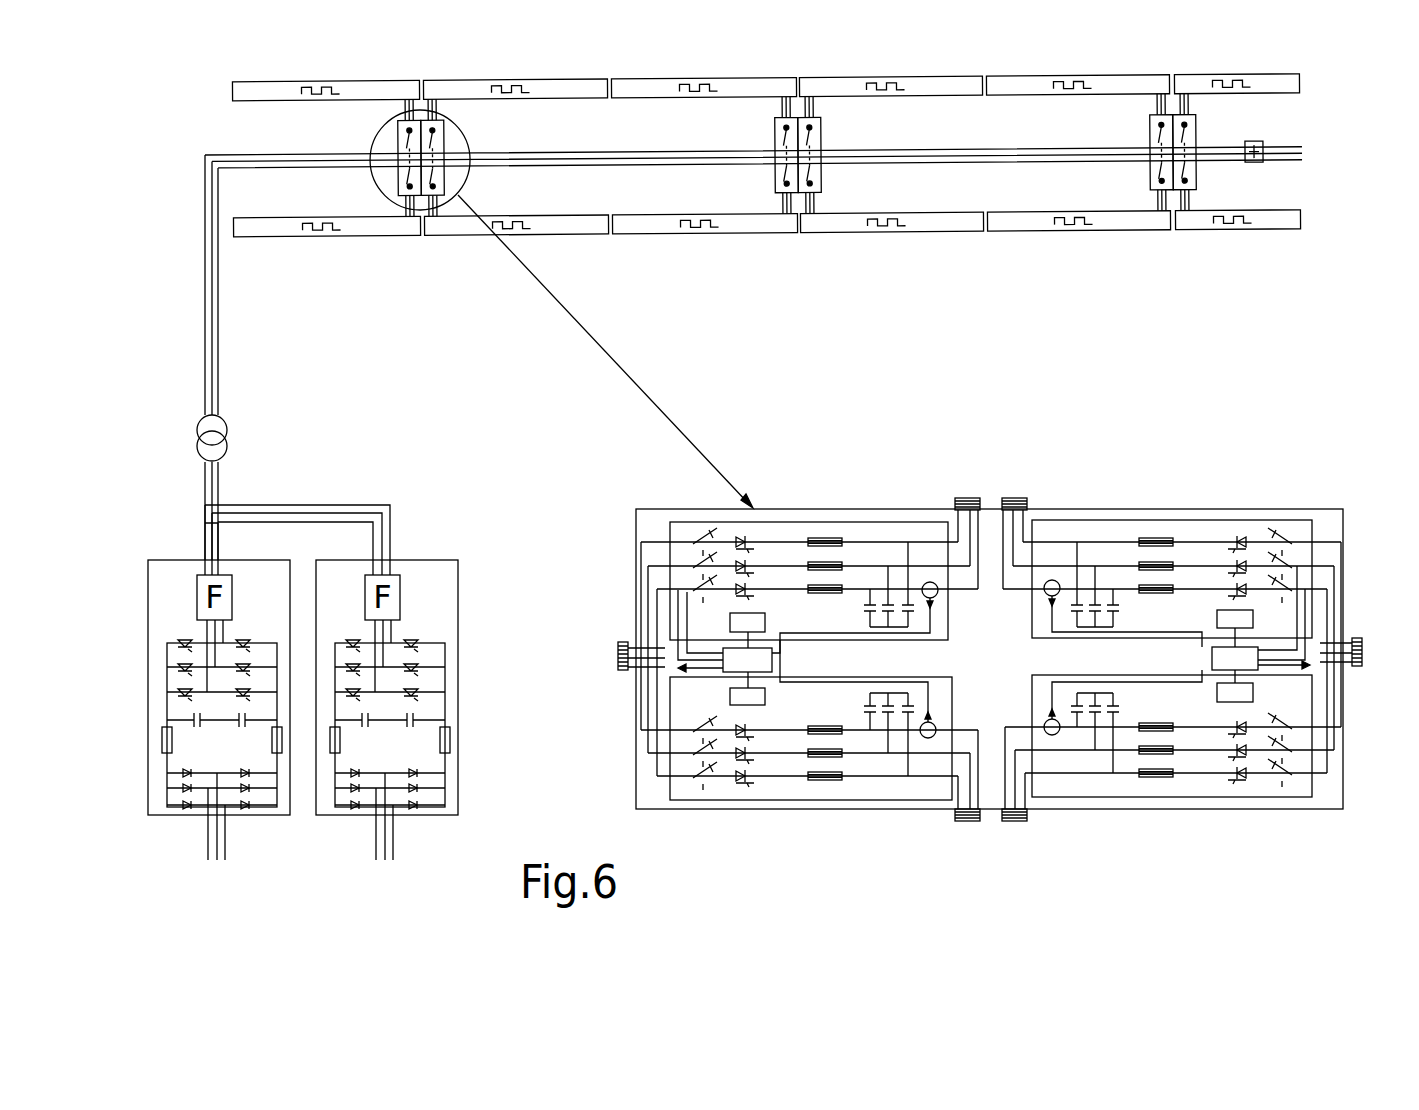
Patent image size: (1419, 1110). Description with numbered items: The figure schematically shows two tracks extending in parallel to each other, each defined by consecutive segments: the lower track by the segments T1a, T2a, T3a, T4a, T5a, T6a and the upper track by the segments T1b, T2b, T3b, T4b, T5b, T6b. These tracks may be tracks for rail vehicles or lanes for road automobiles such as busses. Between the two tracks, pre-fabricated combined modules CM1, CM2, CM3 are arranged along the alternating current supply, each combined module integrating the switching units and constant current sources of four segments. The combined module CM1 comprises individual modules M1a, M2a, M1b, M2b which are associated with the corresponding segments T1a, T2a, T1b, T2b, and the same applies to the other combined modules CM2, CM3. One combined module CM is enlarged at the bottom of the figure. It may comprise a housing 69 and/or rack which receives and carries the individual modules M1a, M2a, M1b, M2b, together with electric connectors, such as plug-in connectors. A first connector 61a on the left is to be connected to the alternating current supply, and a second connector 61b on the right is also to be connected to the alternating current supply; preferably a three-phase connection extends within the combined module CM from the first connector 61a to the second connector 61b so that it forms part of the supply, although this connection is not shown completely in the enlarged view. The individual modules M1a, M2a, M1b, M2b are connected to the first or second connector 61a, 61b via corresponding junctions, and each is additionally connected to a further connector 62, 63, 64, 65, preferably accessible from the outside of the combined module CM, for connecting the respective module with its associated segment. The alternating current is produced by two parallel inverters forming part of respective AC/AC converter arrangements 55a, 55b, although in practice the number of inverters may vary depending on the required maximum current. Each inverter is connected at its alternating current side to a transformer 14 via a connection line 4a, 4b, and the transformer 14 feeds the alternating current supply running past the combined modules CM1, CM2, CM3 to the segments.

The segment T1a is at (332, 241).
The segment T2a is at (565, 243).
The segment T3a is at (757, 241).
The segment T4a is at (950, 243).
The segment T5a is at (1113, 242).
The segment T6a is at (1275, 240).
The segment T1b is at (360, 78).
The segment T2b is at (487, 79).
The segment T3b is at (648, 78).
The segment T4b is at (823, 80).
The segment T5b is at (1010, 78).
The segment T6b is at (1197, 77).
The combined module CM1 is at (447, 147).
The combined module CM2 is at (822, 148).
The combined module CM3 is at (1200, 142).
The combined module CM is at (1215, 507).
The transformer 14 is at (230, 445).
The connection line 4a is at (388, 502).
The connection line 4b is at (205, 538).
The AC/AC converter arrangement 55a is at (487, 693).
The AC/AC converter arrangement 55b is at (148, 768).
The individual module M1a is at (805, 800).
The individual module M1b is at (810, 522).
The individual module M2a is at (1190, 798).
The individual module M2b is at (1107, 518).
The first connector 61a is at (618, 660).
The second connector 61b is at (1363, 658).
The further connector 62 is at (967, 497).
The further connector 63 is at (1012, 498).
The further connector 64 is at (967, 822).
The further connector 65 is at (1018, 820).
The housing 69 is at (1345, 785).